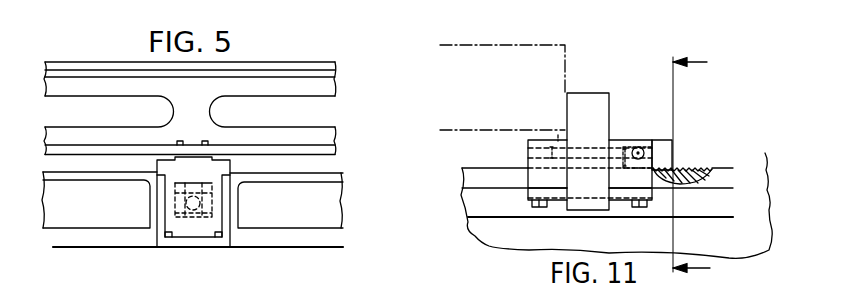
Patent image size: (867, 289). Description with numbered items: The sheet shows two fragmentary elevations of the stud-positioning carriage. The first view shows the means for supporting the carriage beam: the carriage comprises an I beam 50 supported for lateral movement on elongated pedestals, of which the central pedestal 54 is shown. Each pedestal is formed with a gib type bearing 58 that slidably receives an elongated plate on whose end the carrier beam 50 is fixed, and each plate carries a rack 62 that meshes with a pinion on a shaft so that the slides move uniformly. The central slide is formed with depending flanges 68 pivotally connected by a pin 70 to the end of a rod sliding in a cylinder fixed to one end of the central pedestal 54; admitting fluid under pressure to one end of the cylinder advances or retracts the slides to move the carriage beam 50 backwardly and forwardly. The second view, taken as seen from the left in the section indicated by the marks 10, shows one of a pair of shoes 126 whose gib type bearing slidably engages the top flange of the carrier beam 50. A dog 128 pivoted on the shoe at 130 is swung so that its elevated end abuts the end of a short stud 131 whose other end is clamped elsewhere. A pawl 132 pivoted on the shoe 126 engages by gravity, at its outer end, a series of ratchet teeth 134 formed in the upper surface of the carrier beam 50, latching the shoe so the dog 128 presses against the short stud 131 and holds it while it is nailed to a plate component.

In FIG. 5, the I beam 50 is at (303, 65).
In FIG. 5, the pedestal 54 is at (155, 238).
In FIG. 5, the gib type bearing 58 is at (231, 163).
In FIG. 5, the rack 62 is at (155, 192).
In FIG. 5, the depending flanges 68 is at (214, 194).
In FIG. 5, the pin 70 is at (202, 206).
In FIG. 11, the shoe 126 is at (527, 163).
In FIG. 11, the dog 128 is at (590, 93).
In FIG. 11, the pivot 130 is at (558, 138).
In FIG. 11, the short stud 131 is at (502, 45).
In FIG. 11, the pawl 132 is at (663, 140).
In FIG. 11, the ratchet teeth 134 is at (697, 168).
In FIG. 11, the section line 10- 10 is at (704, 169).